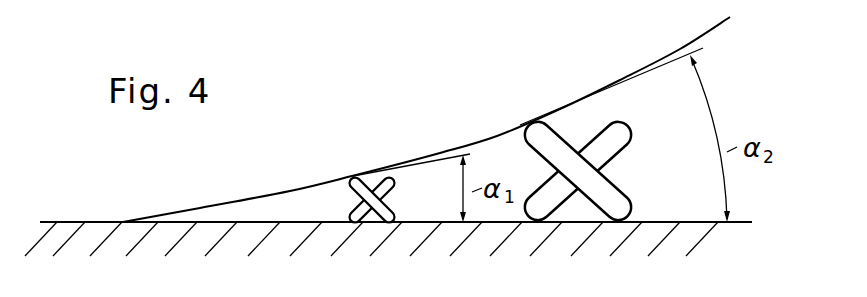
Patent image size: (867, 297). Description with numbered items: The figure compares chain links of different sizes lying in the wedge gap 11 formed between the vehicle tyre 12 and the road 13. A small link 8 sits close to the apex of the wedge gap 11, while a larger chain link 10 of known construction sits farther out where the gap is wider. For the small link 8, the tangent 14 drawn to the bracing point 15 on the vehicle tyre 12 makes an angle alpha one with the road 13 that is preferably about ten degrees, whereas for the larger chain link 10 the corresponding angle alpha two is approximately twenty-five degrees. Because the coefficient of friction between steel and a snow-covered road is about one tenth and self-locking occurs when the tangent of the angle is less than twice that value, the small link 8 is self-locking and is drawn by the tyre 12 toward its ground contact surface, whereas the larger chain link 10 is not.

The small link 8 is at (390, 208).
The larger chain link 10 is at (617, 185).
The wedge gap 11 is at (495, 147).
The vehicle tyre 12 is at (722, 25).
The road 13 is at (273, 221).
The tangent 14 is at (447, 157).
The bracing point 15 is at (398, 150).